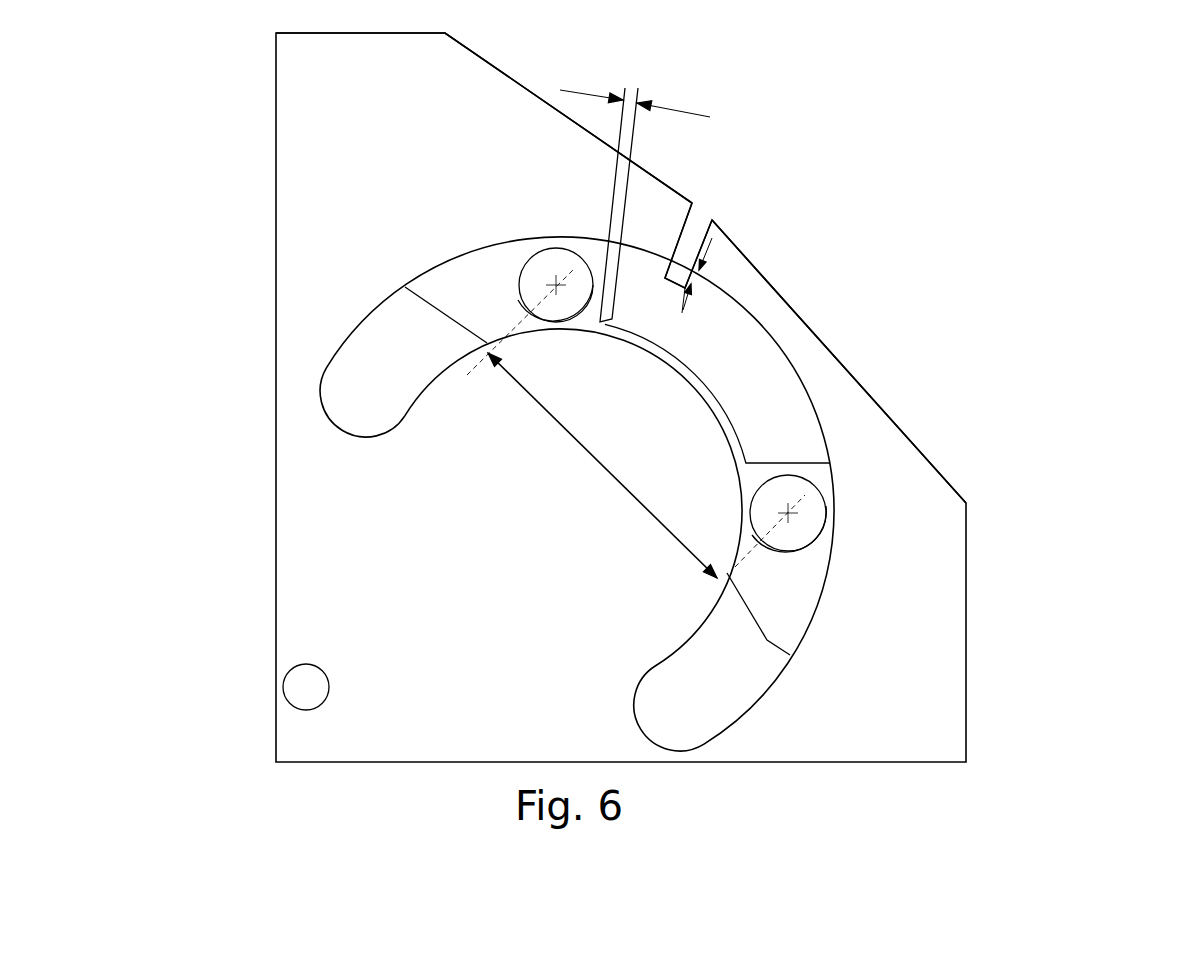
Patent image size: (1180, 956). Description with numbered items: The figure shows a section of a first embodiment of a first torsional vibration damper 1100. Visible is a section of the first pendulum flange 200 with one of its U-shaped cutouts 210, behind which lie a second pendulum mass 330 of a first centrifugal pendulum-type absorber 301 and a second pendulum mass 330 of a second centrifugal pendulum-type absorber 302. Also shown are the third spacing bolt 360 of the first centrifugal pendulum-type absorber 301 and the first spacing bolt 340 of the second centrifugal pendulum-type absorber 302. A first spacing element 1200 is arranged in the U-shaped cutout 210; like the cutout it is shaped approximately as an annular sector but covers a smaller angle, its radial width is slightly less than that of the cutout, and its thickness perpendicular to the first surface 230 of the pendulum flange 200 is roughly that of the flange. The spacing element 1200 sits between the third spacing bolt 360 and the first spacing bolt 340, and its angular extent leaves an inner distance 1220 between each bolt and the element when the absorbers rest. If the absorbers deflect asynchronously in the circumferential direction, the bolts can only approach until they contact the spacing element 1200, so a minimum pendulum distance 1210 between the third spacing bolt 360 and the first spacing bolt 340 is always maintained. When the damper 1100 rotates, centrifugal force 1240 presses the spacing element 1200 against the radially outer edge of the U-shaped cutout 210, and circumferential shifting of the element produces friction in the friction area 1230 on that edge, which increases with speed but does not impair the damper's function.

The first pendulum flange 200 is at (872, 433).
The U-shaped cutout 210 is at (707, 715).
The first surface 230 is at (950, 717).
The first centrifugal pendulum-type absorber 301 is at (463, 292).
The second centrifugal pendulum-type absorber 302 is at (808, 580).
The second pendulum mass 330 is at (637, 394).
The first spacing bolt 340 is at (813, 503).
The third spacing bolt 360 is at (543, 267).
The first torsional vibration damper 1100 is at (1082, 278).
The first spacing element 1200 is at (788, 403).
The minimum pendulum distance 1210 is at (636, 424).
The inner distance 1220 is at (645, 97).
The friction area 1230 is at (705, 270).
The centrifugal force 1240 is at (907, 210).